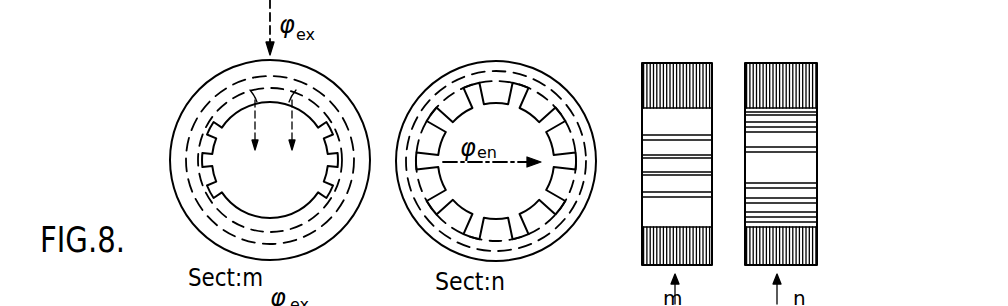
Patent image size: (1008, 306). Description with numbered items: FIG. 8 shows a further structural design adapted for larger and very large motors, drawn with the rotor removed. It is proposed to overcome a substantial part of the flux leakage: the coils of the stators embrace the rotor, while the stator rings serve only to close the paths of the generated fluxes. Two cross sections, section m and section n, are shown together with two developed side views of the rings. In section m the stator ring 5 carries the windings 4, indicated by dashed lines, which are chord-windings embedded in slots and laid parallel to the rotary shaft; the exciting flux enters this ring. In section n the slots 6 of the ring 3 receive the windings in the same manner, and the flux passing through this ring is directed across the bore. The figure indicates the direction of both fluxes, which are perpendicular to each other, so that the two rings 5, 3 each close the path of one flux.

The rotor core 3 is at (562, 57).
The field winding 4 is at (222, 88).
The yoke 5 is at (193, 100).
The slot 6 is at (445, 93).